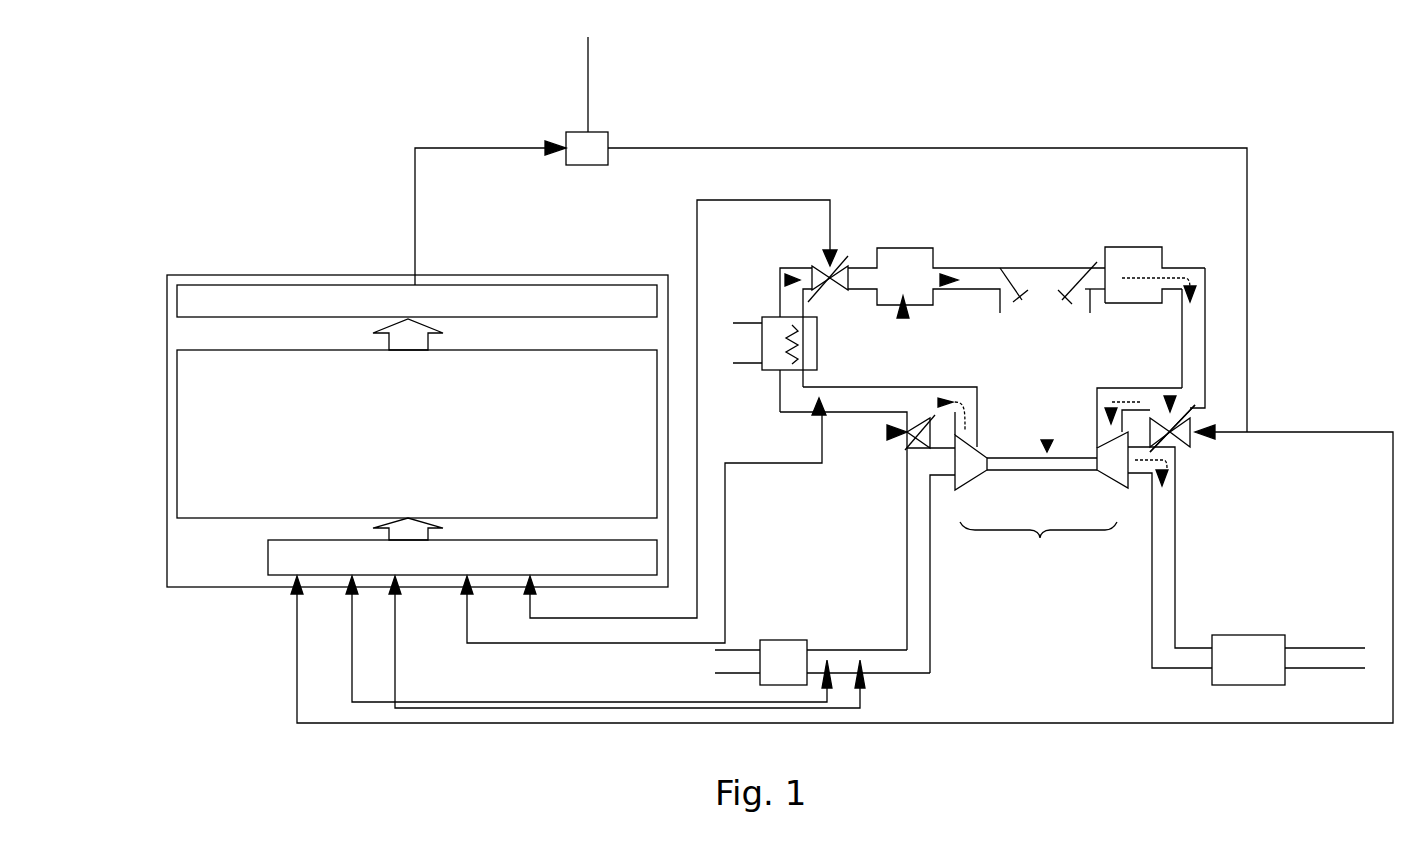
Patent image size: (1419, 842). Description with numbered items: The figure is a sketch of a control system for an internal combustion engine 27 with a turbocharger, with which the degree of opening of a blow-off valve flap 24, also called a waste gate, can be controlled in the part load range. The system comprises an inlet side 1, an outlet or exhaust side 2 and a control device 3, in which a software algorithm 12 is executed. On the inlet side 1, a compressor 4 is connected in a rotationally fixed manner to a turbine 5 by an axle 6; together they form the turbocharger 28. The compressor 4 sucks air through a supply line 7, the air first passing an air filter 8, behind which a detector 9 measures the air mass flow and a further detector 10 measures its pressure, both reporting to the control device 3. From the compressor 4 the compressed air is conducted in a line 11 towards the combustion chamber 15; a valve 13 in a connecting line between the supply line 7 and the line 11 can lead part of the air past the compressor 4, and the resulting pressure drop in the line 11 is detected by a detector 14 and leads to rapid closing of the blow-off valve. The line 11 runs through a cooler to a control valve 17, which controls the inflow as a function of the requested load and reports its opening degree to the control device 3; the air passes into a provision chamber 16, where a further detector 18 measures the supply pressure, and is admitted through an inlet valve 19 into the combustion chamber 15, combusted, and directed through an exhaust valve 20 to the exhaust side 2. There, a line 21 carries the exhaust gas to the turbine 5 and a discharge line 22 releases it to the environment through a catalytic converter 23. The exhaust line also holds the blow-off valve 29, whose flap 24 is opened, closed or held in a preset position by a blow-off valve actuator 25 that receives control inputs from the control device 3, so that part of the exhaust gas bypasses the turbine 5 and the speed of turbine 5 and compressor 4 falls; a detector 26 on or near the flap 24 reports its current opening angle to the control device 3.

The inlet side 1 is at (745, 292).
The outlet side 2 is at (1228, 278).
The control device 3 is at (225, 587).
The compressor 4 is at (962, 470).
The turbine 5 is at (1106, 474).
The axle 6 is at (1038, 470).
The supply line 7 is at (905, 548).
The air filter 8 is at (775, 656).
The detector 9 is at (827, 656).
The further detector 10 is at (860, 656).
The line 11 is at (840, 395).
The software algorithm 12 is at (409, 452).
The valve 13 is at (888, 432).
The detector 14 is at (813, 420).
The combustion chamber 15 is at (1048, 283).
The provision chamber 16 is at (897, 257).
The control valve 17 is at (822, 270).
The further detector 18 is at (905, 320).
The inlet valve 19 is at (997, 268).
The exhaust valve 20 is at (1122, 260).
The line 21 is at (1200, 314).
The discharge line 22 is at (1168, 565).
The catalytic converter 23 is at (1252, 645).
The blow-off valve flap 24 is at (1178, 445).
The blow-off valve actuator 25 is at (618, 130).
The detector 26 is at (1188, 428).
The internal combustion engine 27 is at (1112, 200).
The turbocharger 28 is at (1038, 544).
The blow-off valve 29 is at (1172, 428).